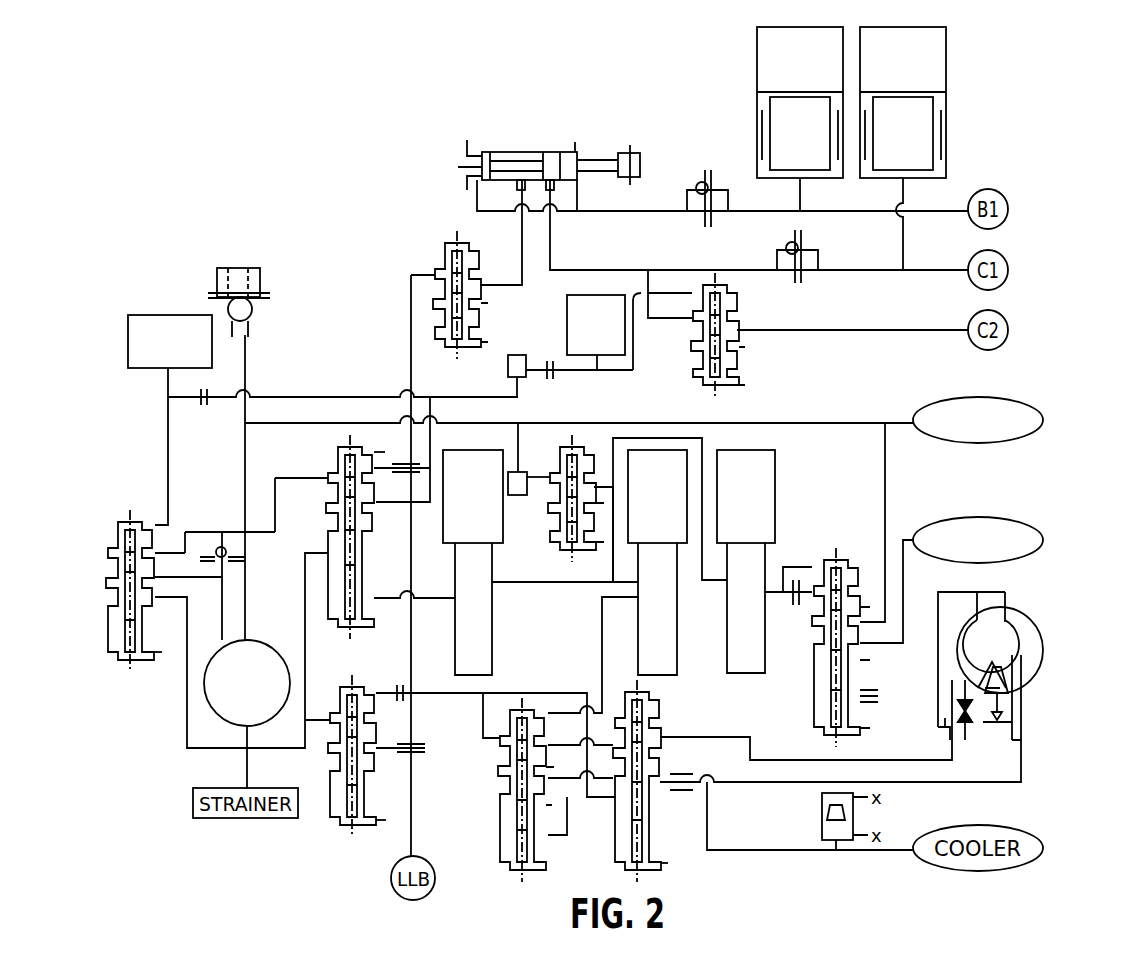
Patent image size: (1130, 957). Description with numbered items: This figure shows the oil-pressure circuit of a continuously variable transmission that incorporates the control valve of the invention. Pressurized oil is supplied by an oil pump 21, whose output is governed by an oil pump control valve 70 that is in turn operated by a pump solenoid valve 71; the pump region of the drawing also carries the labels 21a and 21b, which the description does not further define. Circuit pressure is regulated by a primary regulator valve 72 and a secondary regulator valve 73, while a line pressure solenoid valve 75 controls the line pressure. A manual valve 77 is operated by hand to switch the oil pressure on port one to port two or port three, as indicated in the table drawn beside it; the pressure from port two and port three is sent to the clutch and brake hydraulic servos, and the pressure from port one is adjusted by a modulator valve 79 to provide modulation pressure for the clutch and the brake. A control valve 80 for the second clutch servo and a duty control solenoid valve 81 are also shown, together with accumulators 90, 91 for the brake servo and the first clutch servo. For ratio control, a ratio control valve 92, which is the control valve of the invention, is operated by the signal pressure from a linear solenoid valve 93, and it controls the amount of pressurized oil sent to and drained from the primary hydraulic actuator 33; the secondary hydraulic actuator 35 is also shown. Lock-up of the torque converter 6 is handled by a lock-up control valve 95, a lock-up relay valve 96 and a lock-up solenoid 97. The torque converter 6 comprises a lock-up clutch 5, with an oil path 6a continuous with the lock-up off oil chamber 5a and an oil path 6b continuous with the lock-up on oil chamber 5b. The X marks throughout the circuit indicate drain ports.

The lock-up clutch 5 is at (937, 625).
The lock-up off oil chamber 5a is at (941, 693).
The lock-up on oil chamber 5b is at (986, 591).
The torque converter 6 is at (1052, 631).
The oil path 6a is at (944, 737).
The oil path 6b is at (1032, 736).
The oil pump 21 is at (270, 646).
The pump discharge passage 21a is at (249, 598).
The pump displacement control 21b is at (222, 595).
The primary hydraulic actuator 33 is at (1043, 540).
The secondary hydraulic actuator 35 is at (1043, 420).
The oil pump control valve 70 is at (113, 516).
The pump solenoid valve 71 is at (160, 315).
The primary regulator valve 72 is at (320, 446).
The secondary regulator valve 73 is at (324, 814).
The line pressure solenoid valve 75 is at (492, 448).
The manual valve 77 is at (516, 143).
The modulator valve 79 is at (448, 238).
The C2 control valve 80 is at (747, 292).
The duty control solenoid valve 81 is at (567, 322).
The accumulator 90 is at (757, 60).
The accumulator 91 is at (946, 60).
The ratio control valve 92 is at (850, 545).
The linear solenoid valve 93 is at (776, 458).
The lock-up control valve 95 is at (497, 793).
The lock-up relay valve 96 is at (669, 712).
The lock-up solenoid 97 is at (653, 448).